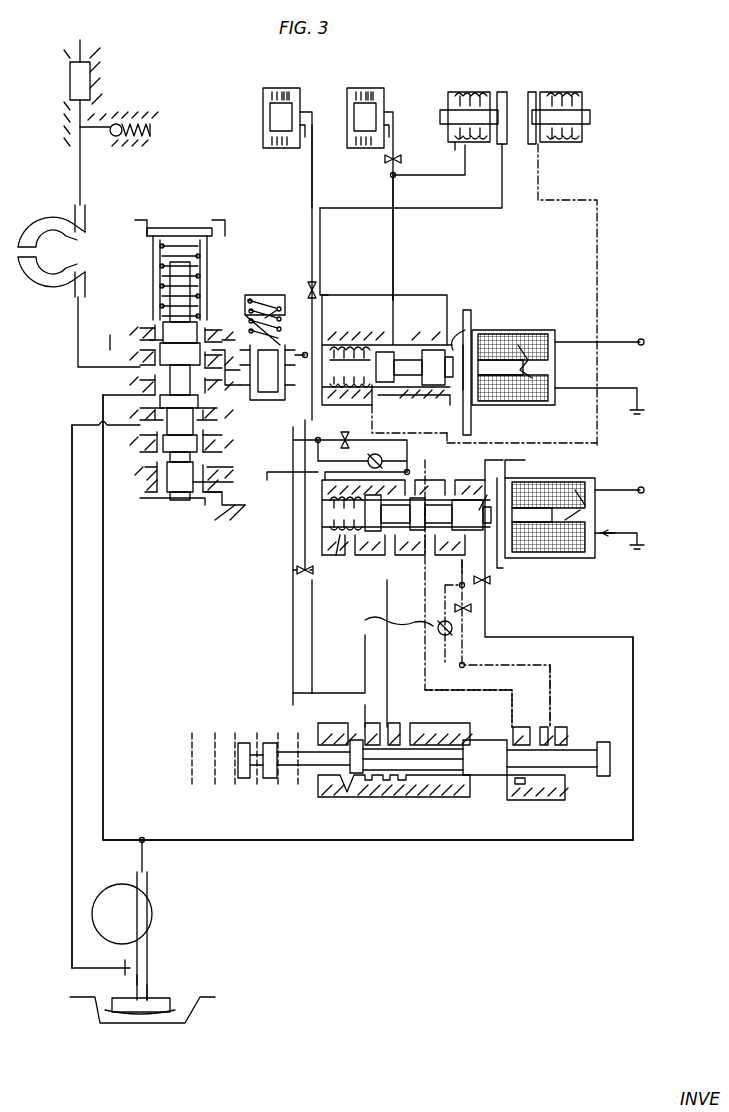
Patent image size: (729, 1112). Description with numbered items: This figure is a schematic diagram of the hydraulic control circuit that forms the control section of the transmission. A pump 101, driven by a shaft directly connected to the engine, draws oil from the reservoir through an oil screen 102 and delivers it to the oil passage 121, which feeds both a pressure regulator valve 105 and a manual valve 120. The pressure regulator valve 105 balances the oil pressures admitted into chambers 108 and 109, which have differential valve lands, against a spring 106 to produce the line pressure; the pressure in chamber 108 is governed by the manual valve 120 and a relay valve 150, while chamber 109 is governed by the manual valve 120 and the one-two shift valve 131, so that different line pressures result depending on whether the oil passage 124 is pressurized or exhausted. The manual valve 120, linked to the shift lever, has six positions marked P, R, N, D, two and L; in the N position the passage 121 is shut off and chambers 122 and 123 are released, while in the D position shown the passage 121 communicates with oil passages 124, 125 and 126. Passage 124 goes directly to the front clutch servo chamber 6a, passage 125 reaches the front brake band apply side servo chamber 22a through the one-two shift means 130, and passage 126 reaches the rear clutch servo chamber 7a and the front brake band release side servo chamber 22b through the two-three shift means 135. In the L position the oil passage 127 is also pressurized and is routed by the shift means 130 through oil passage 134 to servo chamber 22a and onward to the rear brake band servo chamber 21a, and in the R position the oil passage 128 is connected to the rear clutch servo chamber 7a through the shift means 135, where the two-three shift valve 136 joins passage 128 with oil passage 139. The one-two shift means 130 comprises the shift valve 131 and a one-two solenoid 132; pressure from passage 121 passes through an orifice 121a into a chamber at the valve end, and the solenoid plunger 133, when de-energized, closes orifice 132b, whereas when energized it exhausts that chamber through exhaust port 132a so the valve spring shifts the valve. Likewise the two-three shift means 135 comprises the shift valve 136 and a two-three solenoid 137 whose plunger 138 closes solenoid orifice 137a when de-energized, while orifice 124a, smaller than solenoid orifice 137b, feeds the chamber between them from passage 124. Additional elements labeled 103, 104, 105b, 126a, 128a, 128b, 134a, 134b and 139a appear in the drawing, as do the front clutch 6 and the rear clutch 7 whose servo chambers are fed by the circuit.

The pump 101 is at (148, 892).
The oil screen 102 is at (160, 980).
The relief valve 103 is at (120, 112).
The pressure regulator valve 104 is at (92, 70).
The pressure regulator valve 105 is at (173, 348).
The port 105b is at (125, 398).
The spring 106 is at (200, 256).
The chamber 108 is at (150, 342).
The chamber 109 is at (148, 500).
The relay valve 150 is at (258, 398).
The manual valve 120 is at (305, 768).
The oil passage 121 is at (103, 600).
The orifice 121a is at (492, 590).
The chamber 122 is at (412, 783).
The chamber 123 is at (530, 790).
The oil passage 124 is at (304, 218).
The orifice 124a is at (318, 275).
The oil passage 125 is at (387, 652).
The oil passage 126 is at (362, 655).
The check valve 126a is at (295, 565).
The oil passage 127 is at (510, 706).
The oil passage 128 is at (400, 468).
The ball valve 128a is at (462, 635).
The passage 128b is at (379, 618).
The 1-2 shift means 130 is at (637, 530).
The 1-2 shift valve 131 is at (375, 560).
The 1-2 solenoid 132 is at (582, 553).
The exhaust port 132a is at (527, 476).
The orifice 132b is at (505, 565).
The plunger 133 is at (560, 548).
The oil passage 134 is at (320, 235).
The branch passage 134a is at (296, 441).
The branch passage 134b is at (282, 483).
The 2-3 shift means 135 is at (565, 398).
The 2-3 shift valve 136 is at (400, 348).
The 2-3 solenoid 137 is at (514, 332).
The solenoid orifice 137a is at (455, 316).
The solenoid orifice 137b is at (471, 420).
The solenoid plunger 138 is at (508, 322).
The oil passage 139 is at (393, 250).
The check valve 139a is at (384, 163).
The solenoid valve 6 is at (272, 70).
The front clutch servo chamber 6a is at (290, 90).
The solenoid valve 7 is at (355, 70).
The rear clutch servo chamber 7a is at (377, 90).
The front brake band release side servo chamber 22b is at (476, 93).
The front brake band apply side servo chamber 22a is at (496, 93).
The rear brake band servo chamber 21a is at (528, 82).